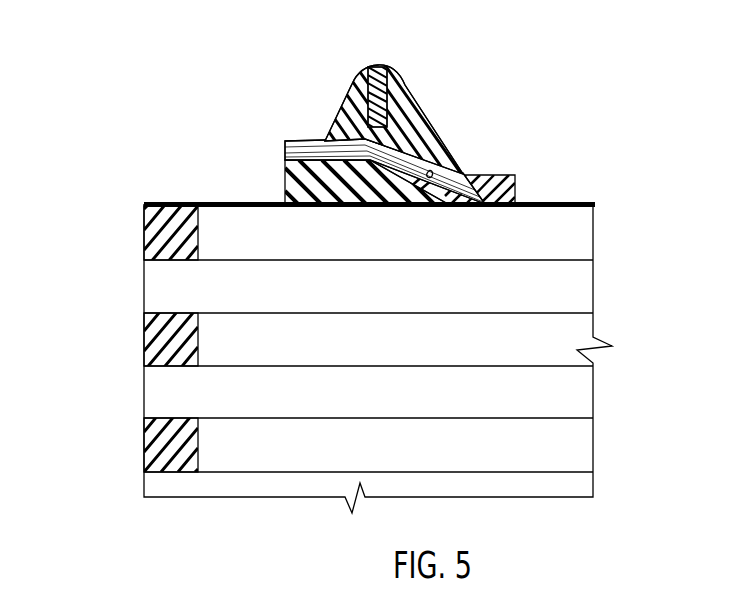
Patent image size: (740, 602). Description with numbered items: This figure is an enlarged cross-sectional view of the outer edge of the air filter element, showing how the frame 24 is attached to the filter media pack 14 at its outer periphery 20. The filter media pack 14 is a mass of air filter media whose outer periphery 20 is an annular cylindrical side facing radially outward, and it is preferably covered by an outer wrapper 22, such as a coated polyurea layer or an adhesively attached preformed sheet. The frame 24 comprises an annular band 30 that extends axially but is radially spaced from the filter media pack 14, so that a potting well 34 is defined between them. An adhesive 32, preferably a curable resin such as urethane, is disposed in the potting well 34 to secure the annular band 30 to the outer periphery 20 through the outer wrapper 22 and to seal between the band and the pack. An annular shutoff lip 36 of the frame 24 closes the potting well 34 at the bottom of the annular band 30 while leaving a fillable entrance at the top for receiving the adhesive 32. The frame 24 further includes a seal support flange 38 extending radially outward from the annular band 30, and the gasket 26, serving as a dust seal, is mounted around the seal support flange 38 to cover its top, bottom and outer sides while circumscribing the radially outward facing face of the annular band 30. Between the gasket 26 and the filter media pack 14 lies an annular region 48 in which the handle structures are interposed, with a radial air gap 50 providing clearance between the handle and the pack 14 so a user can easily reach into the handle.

The filter media pack 14 is at (558, 270).
The outer periphery 20 is at (223, 206).
The outer wrapper 22 is at (369, 165).
The frame 24 is at (462, 172).
The gasket 26 is at (398, 97).
The annular band 30 is at (320, 148).
The adhesive 32 is at (285, 177).
The potting well 34 is at (430, 172).
The annular shutoff lip 36 is at (461, 194).
The seal support flange 38 is at (379, 66).
The annular region 48 is at (315, 165).
The radial air gap 50 is at (369, 165).